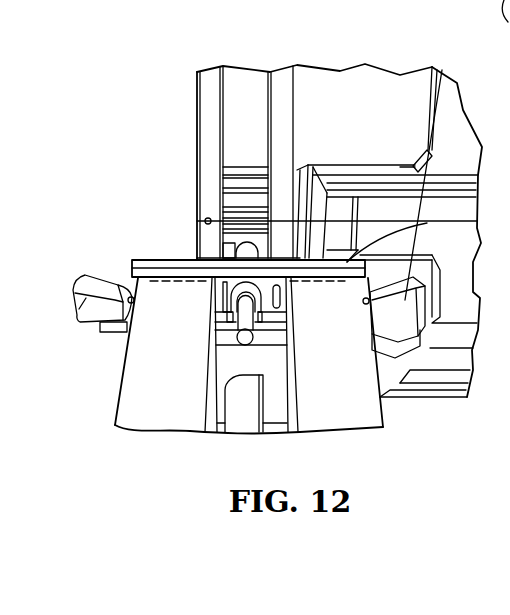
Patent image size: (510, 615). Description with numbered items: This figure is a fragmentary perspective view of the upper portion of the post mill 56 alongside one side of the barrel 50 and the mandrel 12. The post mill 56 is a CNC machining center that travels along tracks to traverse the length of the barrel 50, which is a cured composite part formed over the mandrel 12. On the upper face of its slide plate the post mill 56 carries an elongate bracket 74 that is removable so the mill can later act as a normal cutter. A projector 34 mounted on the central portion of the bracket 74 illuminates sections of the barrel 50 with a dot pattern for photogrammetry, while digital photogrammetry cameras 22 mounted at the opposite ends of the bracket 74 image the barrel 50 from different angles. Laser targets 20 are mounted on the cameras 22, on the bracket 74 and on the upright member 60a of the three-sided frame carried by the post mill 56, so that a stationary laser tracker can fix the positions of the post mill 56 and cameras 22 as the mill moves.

The mandrel section 12 is at (247, 95).
The target 20 is at (205, 221).
The digital photogrammetry camera 22 is at (77, 316).
The projector 34 is at (245, 345).
The barrel 50 is at (390, 115).
The post mill 56 is at (138, 410).
The upright member 60a is at (276, 266).
The bracket 74 is at (125, 332).